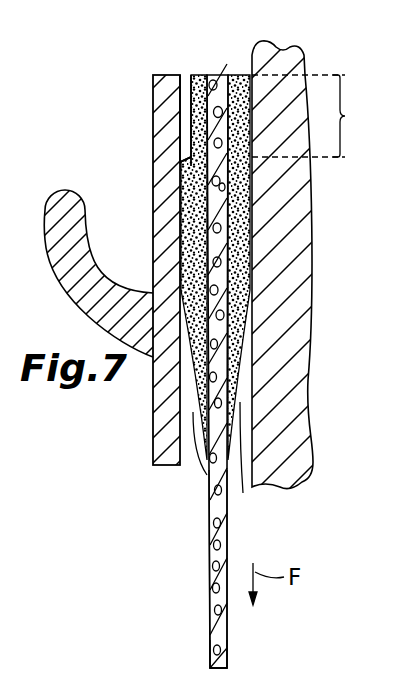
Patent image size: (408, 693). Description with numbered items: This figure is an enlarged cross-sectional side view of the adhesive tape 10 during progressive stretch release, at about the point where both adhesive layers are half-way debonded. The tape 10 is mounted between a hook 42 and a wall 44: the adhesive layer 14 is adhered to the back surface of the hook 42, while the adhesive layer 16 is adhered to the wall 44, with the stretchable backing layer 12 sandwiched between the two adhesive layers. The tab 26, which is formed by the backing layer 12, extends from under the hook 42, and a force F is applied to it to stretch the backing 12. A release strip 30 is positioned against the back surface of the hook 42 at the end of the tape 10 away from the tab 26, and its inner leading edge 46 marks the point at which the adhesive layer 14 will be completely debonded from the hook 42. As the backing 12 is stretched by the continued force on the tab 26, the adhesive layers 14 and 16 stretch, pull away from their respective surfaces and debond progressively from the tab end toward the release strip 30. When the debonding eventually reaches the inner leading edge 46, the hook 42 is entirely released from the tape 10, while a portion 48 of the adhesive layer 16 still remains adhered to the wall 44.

The adhesive tape 10 is at (207, 518).
The backing layer 12 is at (218, 253).
The adhesive layer 14 is at (190, 470).
The adhesive layer 16 is at (247, 300).
The tab 26 is at (210, 633).
The release strip 30 is at (183, 78).
The hook 42 is at (153, 415).
The wall 44 is at (302, 313).
The inner leading edge 46 is at (180, 161).
The portion of adhesive layer 48 is at (316, 116).